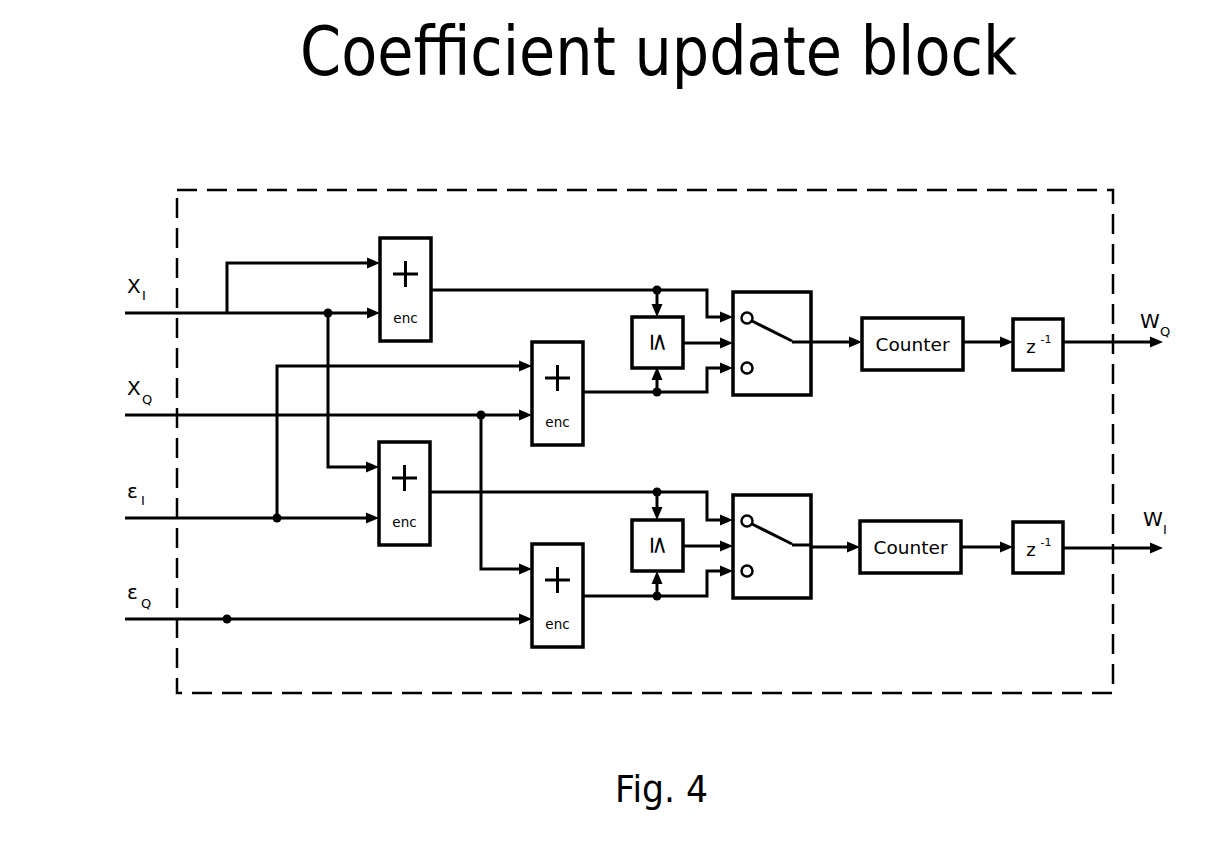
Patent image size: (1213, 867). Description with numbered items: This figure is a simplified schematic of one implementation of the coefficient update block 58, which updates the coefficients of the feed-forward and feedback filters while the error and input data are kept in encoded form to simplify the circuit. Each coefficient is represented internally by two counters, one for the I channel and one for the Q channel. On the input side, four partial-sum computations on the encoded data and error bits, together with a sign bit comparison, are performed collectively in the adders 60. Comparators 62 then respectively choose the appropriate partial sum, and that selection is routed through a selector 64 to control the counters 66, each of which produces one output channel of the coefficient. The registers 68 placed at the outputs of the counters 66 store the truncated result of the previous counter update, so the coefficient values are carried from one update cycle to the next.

The coefficient update block 58 is at (1090, 190).
The adders 60 is at (405, 238).
The comparators 62 is at (632, 353).
The switch 64 is at (775, 292).
The counters 66 is at (913, 318).
The registers 68 is at (1040, 319).